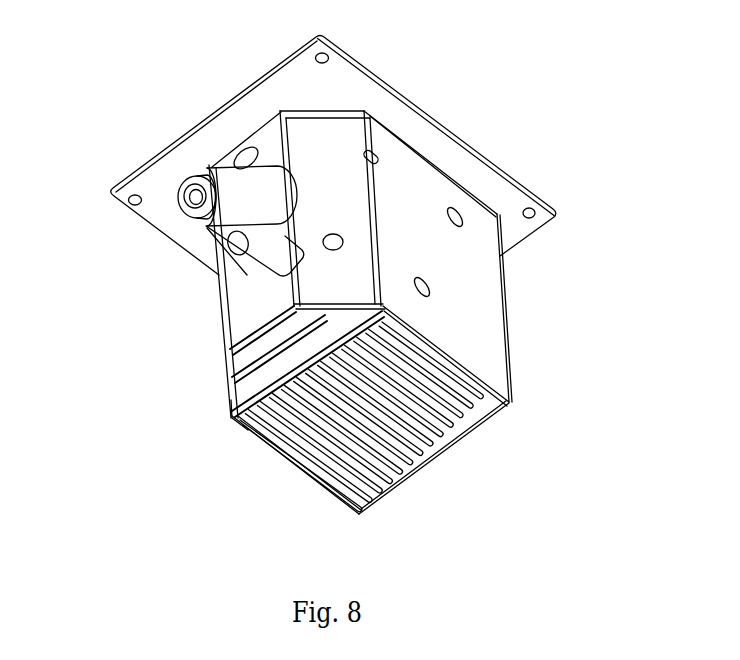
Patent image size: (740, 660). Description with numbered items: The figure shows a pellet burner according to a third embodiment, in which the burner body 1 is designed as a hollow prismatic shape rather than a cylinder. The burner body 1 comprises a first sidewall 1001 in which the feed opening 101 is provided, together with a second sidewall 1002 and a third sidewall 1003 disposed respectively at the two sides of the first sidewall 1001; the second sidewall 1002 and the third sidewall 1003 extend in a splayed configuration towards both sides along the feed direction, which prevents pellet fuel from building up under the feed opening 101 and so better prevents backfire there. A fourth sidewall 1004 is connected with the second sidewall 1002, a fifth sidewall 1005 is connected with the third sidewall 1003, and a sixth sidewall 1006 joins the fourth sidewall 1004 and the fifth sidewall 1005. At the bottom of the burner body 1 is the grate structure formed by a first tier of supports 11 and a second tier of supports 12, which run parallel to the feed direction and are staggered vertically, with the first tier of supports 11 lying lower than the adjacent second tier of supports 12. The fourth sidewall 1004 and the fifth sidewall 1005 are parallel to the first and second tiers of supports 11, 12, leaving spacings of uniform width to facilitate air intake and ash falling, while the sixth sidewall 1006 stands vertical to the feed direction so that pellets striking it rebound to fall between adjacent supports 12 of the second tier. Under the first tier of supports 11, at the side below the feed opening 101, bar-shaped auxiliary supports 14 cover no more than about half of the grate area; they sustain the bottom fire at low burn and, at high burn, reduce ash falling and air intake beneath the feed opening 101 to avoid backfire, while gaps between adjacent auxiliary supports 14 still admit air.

The burner body 1 is at (382, 105).
The feed opening 101 is at (257, 195).
The first sidewall 1001 is at (252, 300).
The second sidewall 1002 is at (229, 382).
The third sidewall 1003 is at (350, 270).
The fourth sidewall 1004 is at (294, 465).
The fifth sidewall 1005 is at (450, 307).
The sixth sidewall 1006 is at (436, 452).
The first tier of supports 11 is at (473, 420).
The second tier of supports 12 is at (388, 468).
The auxiliary supports 14 is at (229, 424).